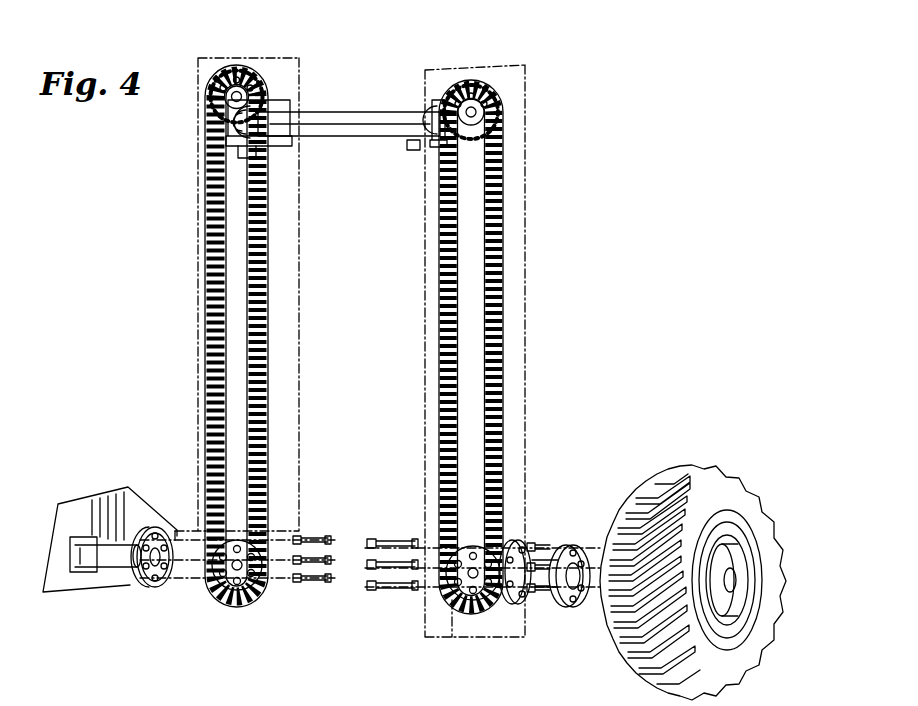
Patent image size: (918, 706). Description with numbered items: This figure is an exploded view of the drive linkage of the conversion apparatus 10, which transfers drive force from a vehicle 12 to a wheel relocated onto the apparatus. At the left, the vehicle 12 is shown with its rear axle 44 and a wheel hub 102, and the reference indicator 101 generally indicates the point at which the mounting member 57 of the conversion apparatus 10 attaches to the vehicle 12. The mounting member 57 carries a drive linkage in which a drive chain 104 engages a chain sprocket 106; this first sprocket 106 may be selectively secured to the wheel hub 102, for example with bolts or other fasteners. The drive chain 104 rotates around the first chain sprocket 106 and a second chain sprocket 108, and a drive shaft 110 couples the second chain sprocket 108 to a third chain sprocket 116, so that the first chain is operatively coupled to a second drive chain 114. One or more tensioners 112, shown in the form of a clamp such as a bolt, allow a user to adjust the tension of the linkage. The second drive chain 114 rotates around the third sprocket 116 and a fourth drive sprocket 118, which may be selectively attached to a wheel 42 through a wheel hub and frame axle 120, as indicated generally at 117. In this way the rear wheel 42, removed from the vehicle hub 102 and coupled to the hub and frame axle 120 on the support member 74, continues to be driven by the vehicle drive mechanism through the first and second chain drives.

The conversion apparatus 10 is at (615, 231).
The vehicle 12 is at (90, 507).
The rear wheel 42 is at (720, 488).
The rear axle 44 is at (92, 565).
The mounting member 57 is at (203, 215).
The support member 74 is at (525, 178).
The point of attachment 101 is at (180, 521).
The wheel hub 102 is at (148, 588).
The drive chain 104 is at (204, 371).
The chain sprocket 106 is at (258, 590).
The second chain sprocket 108 is at (267, 85).
The drive shaft 110 is at (363, 125).
The tensioner 112 is at (262, 102).
The second drive chain 114 is at (499, 252).
The third chain sprocket 116 is at (502, 118).
The wheel attachment arrangement 117 is at (531, 535).
The fourth drive sprocket 118 is at (453, 528).
The wheel hub and frame axle 120 is at (515, 602).